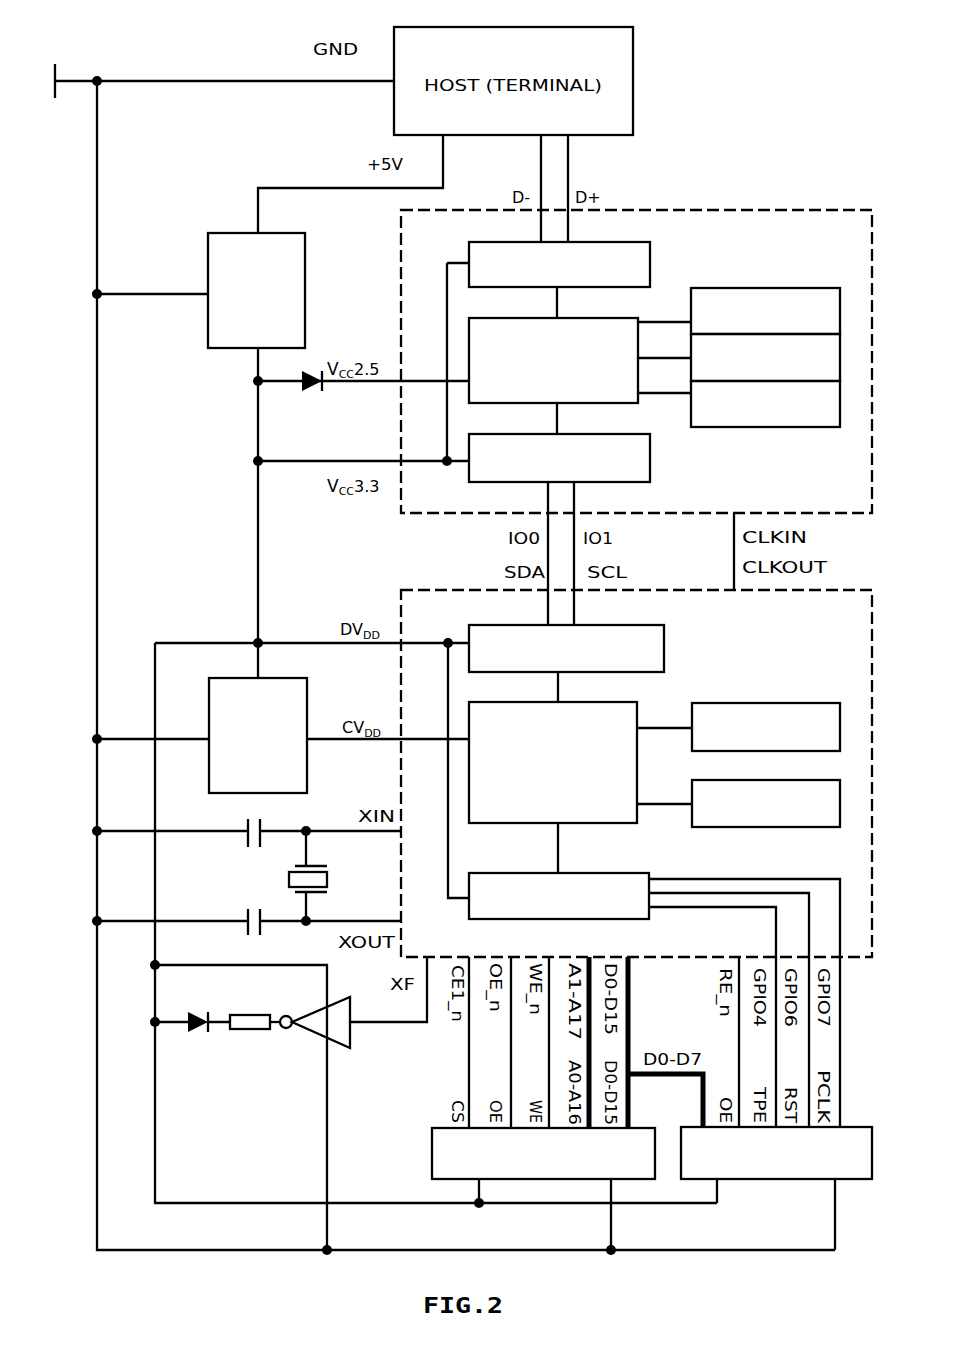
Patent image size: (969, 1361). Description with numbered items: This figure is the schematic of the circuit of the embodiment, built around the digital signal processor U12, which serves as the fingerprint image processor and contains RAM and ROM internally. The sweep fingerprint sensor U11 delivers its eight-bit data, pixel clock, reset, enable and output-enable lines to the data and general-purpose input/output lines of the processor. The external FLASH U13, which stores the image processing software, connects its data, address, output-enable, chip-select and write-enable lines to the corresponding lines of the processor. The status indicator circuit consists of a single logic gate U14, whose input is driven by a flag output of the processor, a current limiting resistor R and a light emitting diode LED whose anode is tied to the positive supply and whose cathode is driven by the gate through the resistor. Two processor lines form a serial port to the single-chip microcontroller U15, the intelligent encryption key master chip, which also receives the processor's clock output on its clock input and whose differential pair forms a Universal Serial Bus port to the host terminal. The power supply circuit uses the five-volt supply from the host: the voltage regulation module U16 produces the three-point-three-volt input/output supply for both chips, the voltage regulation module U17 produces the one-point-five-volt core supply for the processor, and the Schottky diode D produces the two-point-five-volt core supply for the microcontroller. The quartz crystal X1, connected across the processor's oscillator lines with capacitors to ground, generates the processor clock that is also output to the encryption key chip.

The sweep fingerprint sensor U11 is at (760, 1064).
The digital signal processor U12 is at (636, 773).
The FLASH U13 is at (543, 1103).
The single logic gate U14 is at (335, 1018).
The single-chip microcontroller U15 is at (636, 361).
The voltage regulation module U16 is at (201, 290).
The voltage regulation module U17 is at (283, 735).
The quartz crystal X1 is at (328, 876).
The Schottky diode D is at (363, 397).
The current limiting resistor R is at (254, 1008).
The light emitting diode LED is at (206, 1010).